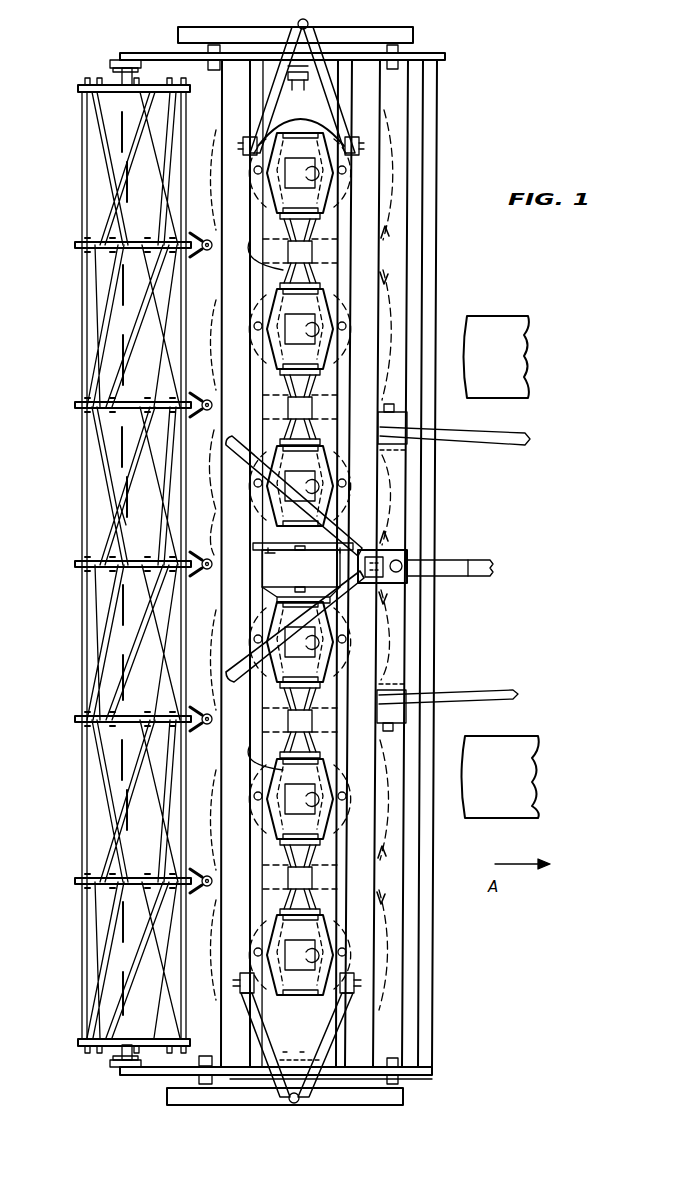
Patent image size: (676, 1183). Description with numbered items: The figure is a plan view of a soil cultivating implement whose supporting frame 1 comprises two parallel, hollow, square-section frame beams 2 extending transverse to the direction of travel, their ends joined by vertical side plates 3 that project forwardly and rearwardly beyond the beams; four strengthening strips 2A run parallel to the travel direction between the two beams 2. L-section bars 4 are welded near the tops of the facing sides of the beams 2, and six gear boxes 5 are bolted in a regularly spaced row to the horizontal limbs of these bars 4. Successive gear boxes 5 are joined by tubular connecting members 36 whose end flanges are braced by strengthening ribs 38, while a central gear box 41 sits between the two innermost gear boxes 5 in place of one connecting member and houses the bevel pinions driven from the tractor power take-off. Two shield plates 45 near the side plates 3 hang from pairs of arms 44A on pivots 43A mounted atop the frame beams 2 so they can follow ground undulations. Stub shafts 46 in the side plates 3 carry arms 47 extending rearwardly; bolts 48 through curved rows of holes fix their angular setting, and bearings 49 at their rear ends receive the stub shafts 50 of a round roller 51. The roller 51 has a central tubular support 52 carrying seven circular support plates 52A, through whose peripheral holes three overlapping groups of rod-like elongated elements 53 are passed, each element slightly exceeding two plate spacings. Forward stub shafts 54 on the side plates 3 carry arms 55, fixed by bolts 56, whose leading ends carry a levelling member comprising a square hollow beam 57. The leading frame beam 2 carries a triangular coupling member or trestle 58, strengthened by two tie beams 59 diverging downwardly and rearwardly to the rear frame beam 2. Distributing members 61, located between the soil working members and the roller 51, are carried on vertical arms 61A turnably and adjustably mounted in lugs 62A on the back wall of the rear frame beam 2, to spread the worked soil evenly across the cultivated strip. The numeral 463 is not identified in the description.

The supporting frame 1 is at (391, 125).
The frame beams 2 is at (224, 118).
The strengthening strips 2A is at (335, 270).
The side plates 3 is at (300, 1068).
The bars 4 is at (250, 908).
The gear boxes 5 is at (322, 315).
The tubular connecting members 36 is at (318, 248).
The strengthening ribs 38 is at (284, 242).
The central gear box 41 is at (270, 584).
The pivots 43A is at (301, 133).
The arms 44A is at (312, 36).
The shield plates 45 is at (245, 30).
The stub shafts 46 is at (283, 1050).
The arms 47 is at (122, 58).
The bolts 48 is at (212, 72).
The bearings 49 is at (112, 63).
The stub shafts 50 is at (88, 80).
The roller 51 is at (112, 569).
The tubular support 52 is at (120, 519).
The support plates 52A is at (78, 246).
The elongated elements 53 is at (115, 218).
The stub shafts 54 is at (318, 30).
The arms 55 is at (445, 57).
The bolts 56 is at (400, 50).
The hollow beam 57 is at (436, 176).
The coupling member or trestle 58 is at (408, 485).
The tie beams 59 is at (345, 592).
The distributing members 61 is at (209, 229).
The arm 61A is at (202, 492).
The lugs 62A is at (214, 258).
The top bracket 463 is at (300, 80).